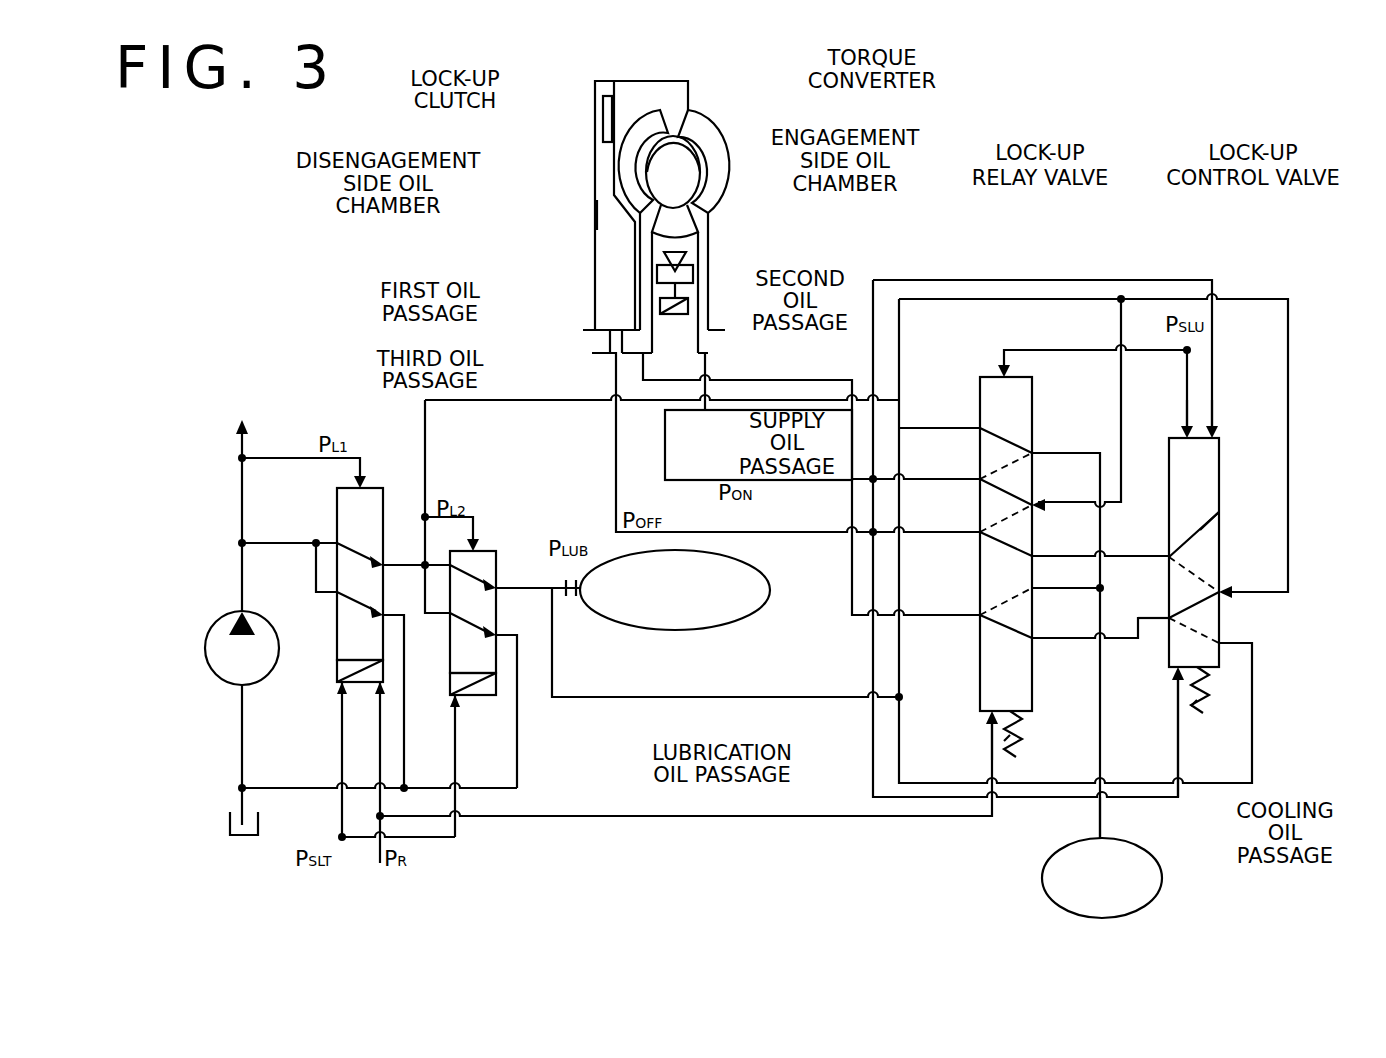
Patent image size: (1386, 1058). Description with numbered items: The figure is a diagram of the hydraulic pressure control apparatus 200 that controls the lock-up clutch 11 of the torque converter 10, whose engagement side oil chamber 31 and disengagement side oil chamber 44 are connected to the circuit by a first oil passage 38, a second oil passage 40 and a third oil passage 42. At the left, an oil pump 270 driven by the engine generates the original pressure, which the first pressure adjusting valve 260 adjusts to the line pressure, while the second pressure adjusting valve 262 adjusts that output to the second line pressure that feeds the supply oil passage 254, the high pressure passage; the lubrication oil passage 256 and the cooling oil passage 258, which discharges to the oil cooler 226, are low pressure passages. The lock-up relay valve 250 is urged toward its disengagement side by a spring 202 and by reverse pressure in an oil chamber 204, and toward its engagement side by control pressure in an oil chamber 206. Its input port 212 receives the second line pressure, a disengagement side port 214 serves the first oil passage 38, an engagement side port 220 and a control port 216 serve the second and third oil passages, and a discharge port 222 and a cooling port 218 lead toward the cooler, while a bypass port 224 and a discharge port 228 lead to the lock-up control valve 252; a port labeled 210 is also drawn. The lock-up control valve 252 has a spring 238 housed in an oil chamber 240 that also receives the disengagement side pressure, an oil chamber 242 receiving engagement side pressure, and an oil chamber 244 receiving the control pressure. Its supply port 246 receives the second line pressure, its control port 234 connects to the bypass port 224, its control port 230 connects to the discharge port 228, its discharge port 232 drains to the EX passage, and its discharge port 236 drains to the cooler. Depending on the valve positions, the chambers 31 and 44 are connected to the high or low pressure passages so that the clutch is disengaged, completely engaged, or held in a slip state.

The torque converter 10 is at (704, 90).
The lock-up clutch 11 is at (602, 110).
The engagement side oil chamber 31 is at (678, 170).
The disengagement side oil chamber 44 is at (606, 217).
The first oil passage 38 is at (592, 353).
The second oil passage 40 is at (706, 343).
The third oil passage 42 is at (614, 372).
The hydraulic pressure control apparatus 200 is at (982, 120).
The lock-up relay valve 250 is at (1006, 266).
The lock-up control valve 252 is at (1239, 276).
The supply oil passage 254 is at (737, 402).
The lubrication oil passage 256 is at (630, 698).
The cooling oil passage 258 is at (1102, 813).
The first pressure adjusting valve 260 is at (304, 406).
The second pressure adjusting valve 262 is at (482, 480).
The oil pump 270 is at (222, 635).
The spring 202 is at (1020, 742).
The oil chamber 204 is at (988, 718).
The oil chamber 206 is at (1002, 370).
The input port 210 is at (980, 428).
The input port 212 is at (1032, 505).
The disengagement side port 214 is at (980, 532).
The control port 216 is at (980, 615).
The cooling port 218 is at (1032, 588).
The engagement side port 220 is at (980, 479).
The discharge port 222 is at (1032, 453).
The bypass port 224 is at (1032, 640).
The discharge port 228 is at (1032, 556).
The control port 230 is at (1168, 554).
The discharge port 232 is at (1257, 498).
The control port 234 is at (1168, 618).
The discharge port 236 is at (1222, 641).
The spring 238 is at (1202, 712).
The oil chamber 240 is at (1175, 676).
The oil chamber 242 is at (1214, 436).
The oil chamber 244 is at (1186, 436).
The supply port 246 is at (1226, 590).
The oil cooler 226 is at (1058, 858).